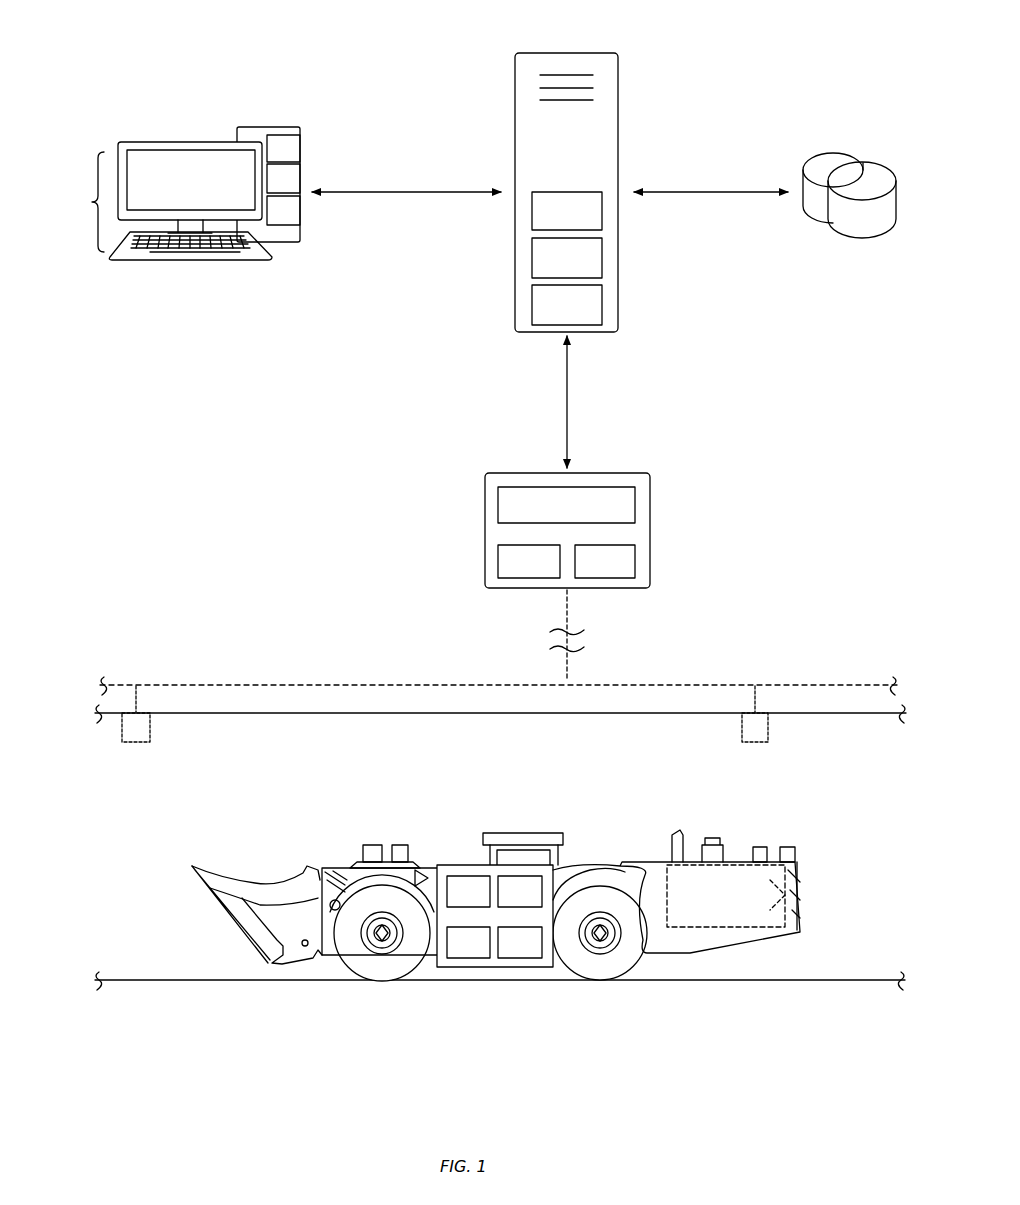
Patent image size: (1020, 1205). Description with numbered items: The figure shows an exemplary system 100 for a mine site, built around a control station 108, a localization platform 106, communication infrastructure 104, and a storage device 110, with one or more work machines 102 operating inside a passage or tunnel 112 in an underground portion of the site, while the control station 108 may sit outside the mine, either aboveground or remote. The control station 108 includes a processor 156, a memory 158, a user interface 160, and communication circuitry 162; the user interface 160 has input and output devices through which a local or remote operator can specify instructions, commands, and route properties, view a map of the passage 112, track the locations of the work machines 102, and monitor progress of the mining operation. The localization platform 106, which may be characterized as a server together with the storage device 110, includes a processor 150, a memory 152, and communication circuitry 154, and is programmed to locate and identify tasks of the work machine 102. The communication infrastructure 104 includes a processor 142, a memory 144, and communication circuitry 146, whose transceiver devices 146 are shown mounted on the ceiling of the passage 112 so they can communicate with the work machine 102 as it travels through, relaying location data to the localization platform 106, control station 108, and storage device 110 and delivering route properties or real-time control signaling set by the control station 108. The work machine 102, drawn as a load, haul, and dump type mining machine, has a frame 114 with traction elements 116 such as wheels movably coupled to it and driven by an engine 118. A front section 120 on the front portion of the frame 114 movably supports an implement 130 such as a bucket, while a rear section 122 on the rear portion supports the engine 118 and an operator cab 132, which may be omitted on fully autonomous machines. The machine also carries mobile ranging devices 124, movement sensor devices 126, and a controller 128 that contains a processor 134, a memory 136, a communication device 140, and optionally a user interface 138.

The system 100 is at (130, 28).
The work machine 102 is at (602, 808).
The communication infrastructure 104 is at (638, 473).
The localization platform 106 is at (606, 53).
The control station 108 is at (248, 128).
The storage device 110 is at (832, 152).
The passage 112 is at (105, 848).
The frame 114 is at (690, 955).
The traction elements 116 is at (380, 968).
The engine 118 is at (740, 896).
The front section 120 is at (418, 866).
The rear section 122 is at (800, 895).
The mobile ranging device 124 is at (363, 848).
The movement sensor device 126 is at (397, 845).
The controller 128 is at (490, 967).
The implement 130 is at (235, 928).
The operator cab 132 is at (528, 833).
The processor 134 is at (483, 901).
The memory 136 is at (534, 901).
The user interface 138 is at (483, 952).
The communication device 140 is at (534, 952).
The processor 142 is at (586, 516).
The memory 144 is at (546, 574).
The communication circuitry 146 is at (622, 574).
The processor 150 is at (582, 222).
The memory 152 is at (582, 269).
The communication circuitry 154 is at (582, 316).
The processor 156 is at (283, 145).
The memory 158 is at (283, 177).
The user interface 160 is at (81, 202).
The communication circuitry 162 is at (283, 210).